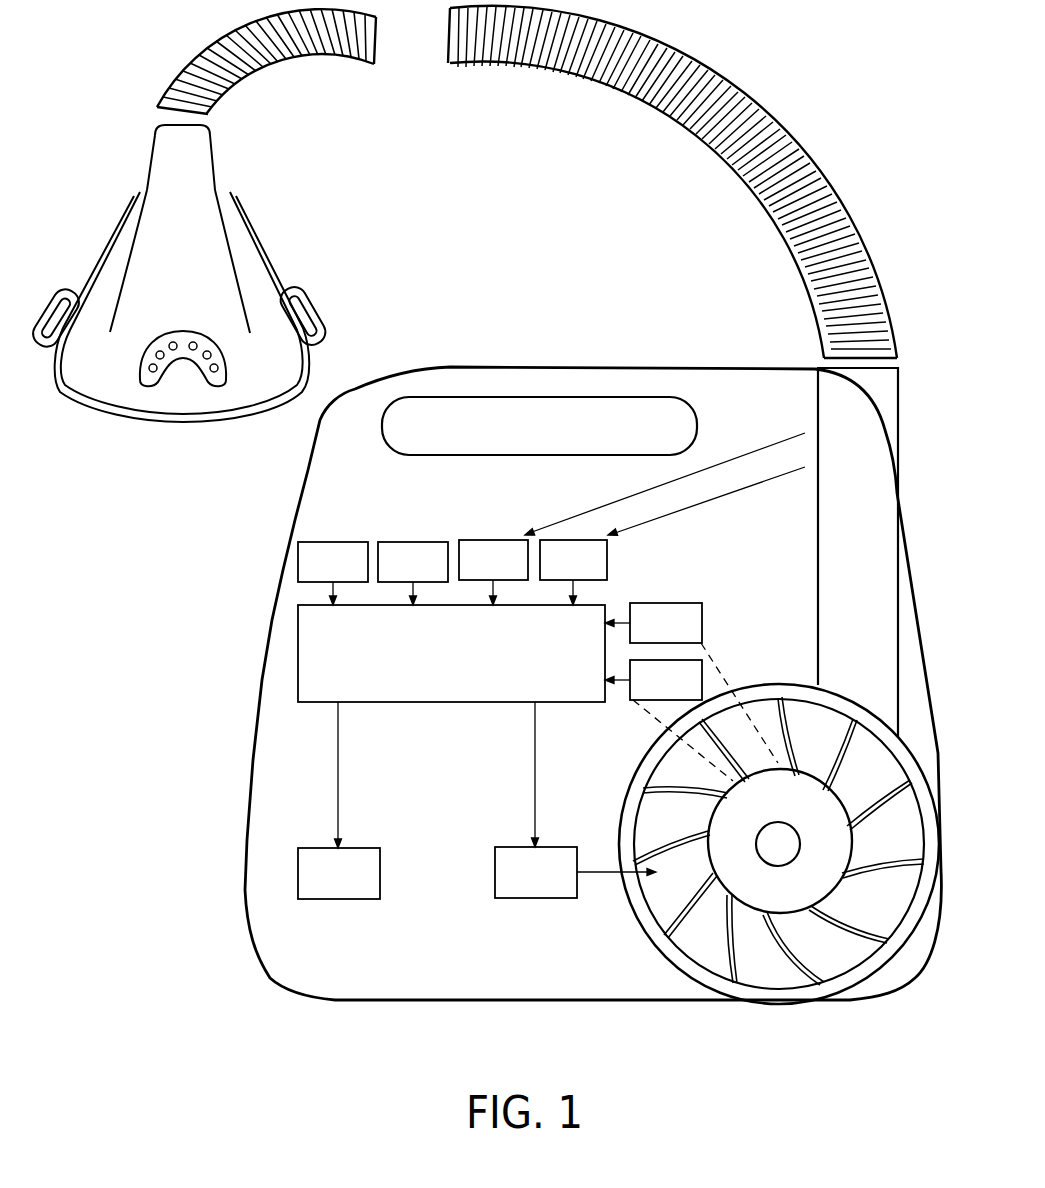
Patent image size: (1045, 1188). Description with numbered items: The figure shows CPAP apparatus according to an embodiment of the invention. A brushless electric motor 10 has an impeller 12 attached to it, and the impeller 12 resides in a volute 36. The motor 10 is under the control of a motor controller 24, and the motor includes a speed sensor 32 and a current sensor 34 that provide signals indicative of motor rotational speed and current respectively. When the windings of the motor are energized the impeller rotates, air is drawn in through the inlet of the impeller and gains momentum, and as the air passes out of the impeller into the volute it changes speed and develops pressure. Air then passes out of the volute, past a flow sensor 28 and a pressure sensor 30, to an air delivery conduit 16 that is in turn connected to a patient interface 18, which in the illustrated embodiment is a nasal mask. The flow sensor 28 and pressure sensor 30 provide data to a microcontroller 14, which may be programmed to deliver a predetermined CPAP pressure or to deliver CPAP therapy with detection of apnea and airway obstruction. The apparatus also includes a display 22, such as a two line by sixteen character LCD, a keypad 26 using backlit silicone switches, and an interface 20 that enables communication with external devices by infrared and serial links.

The brushless electric motor 10 is at (751, 867).
The impeller 12 is at (834, 915).
The microcontroller 14 is at (451, 726).
The air delivery conduit 16 is at (497, 65).
The patient interface 18 is at (198, 307).
The interface 20 is at (322, 899).
The display 22 is at (410, 542).
The motor controller 24 is at (512, 900).
The keypad 26 is at (310, 542).
The flow sensor 28 is at (490, 540).
The pressure sensor 30 is at (562, 580).
The speed sensor 32 is at (666, 603).
The current sensor 34 is at (630, 690).
The volute 36 is at (630, 919).